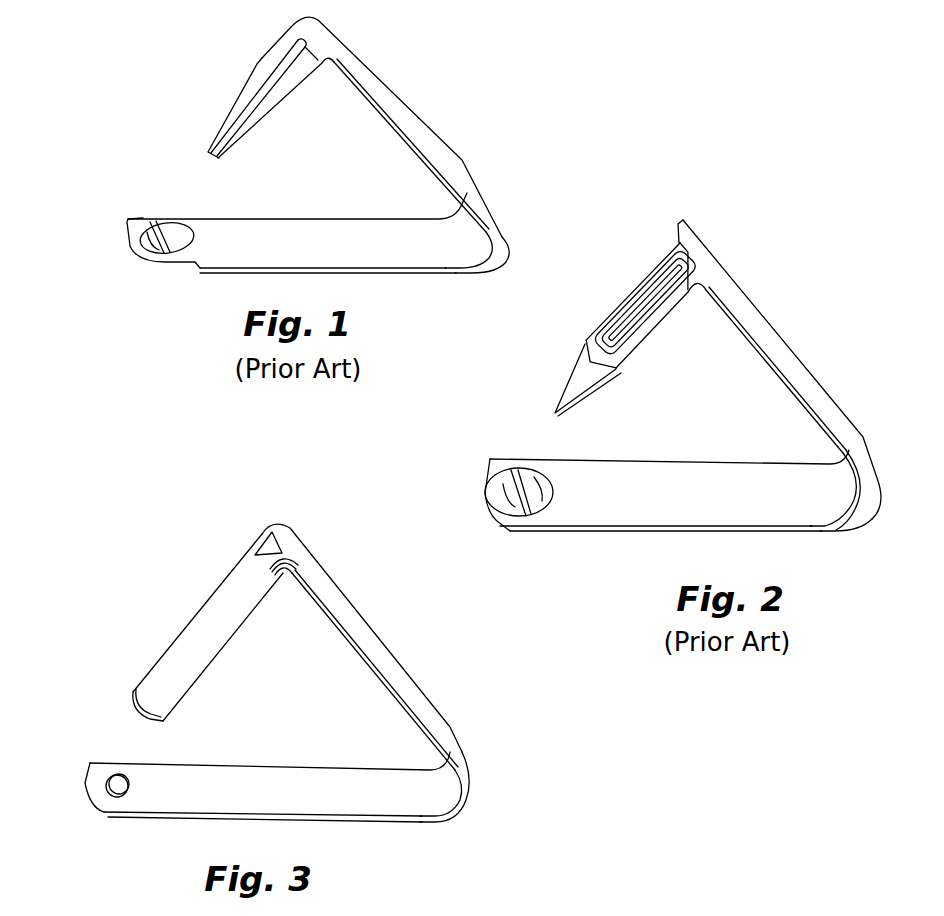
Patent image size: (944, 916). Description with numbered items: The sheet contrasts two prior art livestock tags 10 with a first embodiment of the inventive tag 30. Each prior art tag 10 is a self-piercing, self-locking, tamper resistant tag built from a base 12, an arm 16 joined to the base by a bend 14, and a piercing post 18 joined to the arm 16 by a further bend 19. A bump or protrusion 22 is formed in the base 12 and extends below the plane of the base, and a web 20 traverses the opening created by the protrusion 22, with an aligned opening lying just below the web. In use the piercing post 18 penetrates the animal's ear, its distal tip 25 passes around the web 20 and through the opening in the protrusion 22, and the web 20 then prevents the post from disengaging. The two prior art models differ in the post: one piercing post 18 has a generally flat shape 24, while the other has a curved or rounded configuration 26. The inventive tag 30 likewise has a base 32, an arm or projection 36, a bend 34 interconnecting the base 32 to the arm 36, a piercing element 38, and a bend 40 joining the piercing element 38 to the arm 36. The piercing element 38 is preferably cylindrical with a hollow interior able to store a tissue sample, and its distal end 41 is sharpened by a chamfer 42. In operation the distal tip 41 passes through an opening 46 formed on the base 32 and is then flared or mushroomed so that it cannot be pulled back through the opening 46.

In FIG. 1, the prior art livestock tag 10 is at (158, 108).
In FIG. 2, the prior art livestock tag 10 is at (773, 247).
In FIG. 1, the base 12 is at (408, 236).
In FIG. 2, the base 12 is at (603, 497).
In FIG. 1, the bend 14 is at (490, 262).
In FIG. 2, the bend 14 is at (871, 513).
In FIG. 1, the arm 16 is at (408, 116).
In FIG. 2, the arm 16 is at (777, 350).
In FIG. 1, the piercing post 18 is at (284, 104).
In FIG. 2, the piercing post 18 is at (652, 352).
In FIG. 1, the bend 19 is at (329, 66).
In FIG. 2, the bend 19 is at (701, 297).
In FIG. 1, the web 20 is at (164, 228).
In FIG. 2, the web 20 is at (525, 488).
In FIG. 1, the protrusion 22 is at (150, 243).
In FIG. 2, the protrusion 22 is at (507, 503).
In FIG. 1, the flat shape 24 is at (270, 80).
In FIG. 1, the distal tip 25 is at (213, 157).
In FIG. 2, the distal tip 25 is at (555, 413).
In FIG. 2, the rounded configuration 26 is at (647, 293).
In FIG. 3, the tag 30 is at (163, 596).
In FIG. 3, the base 32 is at (267, 787).
In FIG. 3, the bend 34 is at (465, 810).
In FIG. 3, the arm 36 is at (380, 650).
In FIG. 3, the piercing element 38 is at (206, 659).
In FIG. 3, the bend 40 is at (287, 572).
In FIG. 3, the distal end 41 is at (167, 724).
In FIG. 3, the chamfer 42 is at (140, 712).
In FIG. 3, the opening 46 is at (118, 790).